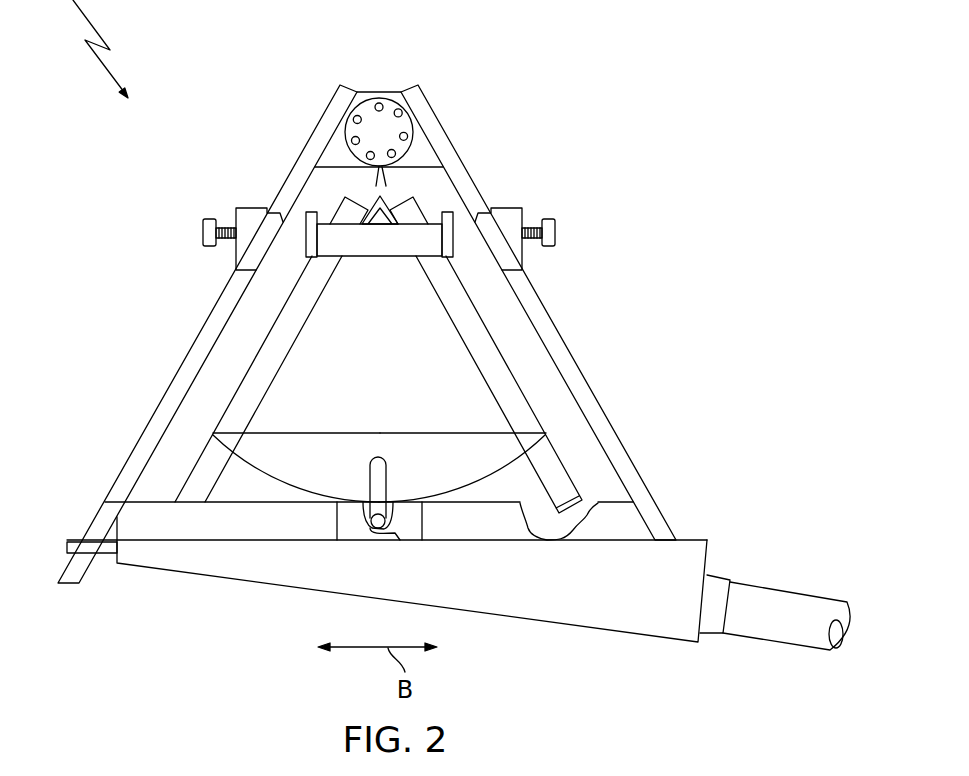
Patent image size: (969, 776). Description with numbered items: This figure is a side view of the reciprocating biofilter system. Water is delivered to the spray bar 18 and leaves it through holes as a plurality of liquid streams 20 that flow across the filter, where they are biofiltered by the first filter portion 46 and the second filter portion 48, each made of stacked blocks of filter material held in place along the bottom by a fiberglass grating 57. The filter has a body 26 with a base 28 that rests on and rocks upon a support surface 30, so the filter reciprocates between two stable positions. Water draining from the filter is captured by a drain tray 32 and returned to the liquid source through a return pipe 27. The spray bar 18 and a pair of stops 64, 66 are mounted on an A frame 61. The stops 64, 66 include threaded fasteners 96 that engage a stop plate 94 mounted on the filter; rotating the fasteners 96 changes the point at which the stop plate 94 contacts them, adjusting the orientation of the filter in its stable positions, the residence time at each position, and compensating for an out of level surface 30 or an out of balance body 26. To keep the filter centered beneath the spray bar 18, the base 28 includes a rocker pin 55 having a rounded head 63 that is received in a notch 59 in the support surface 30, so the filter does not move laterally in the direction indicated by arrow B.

The spray bar 18 is at (368, 103).
The liquid streams 20 is at (385, 180).
The body 26 is at (291, 441).
The return pipe 27 is at (768, 633).
The base 28 is at (472, 470).
The support surface 30 is at (163, 533).
The drain tray 32 is at (618, 630).
The first filter portion 46 is at (253, 383).
The second filter portion 48 is at (452, 313).
The rocker pin 55 is at (387, 478).
The fiberglass grating 57 is at (592, 488).
The notch 59 is at (396, 543).
The A frame 61 is at (318, 126).
The rounded head 63 is at (374, 546).
The stop 64 is at (513, 192).
The stop 66 is at (248, 202).
The stop plate 94 is at (369, 252).
The threaded fasteners 96 is at (203, 233).